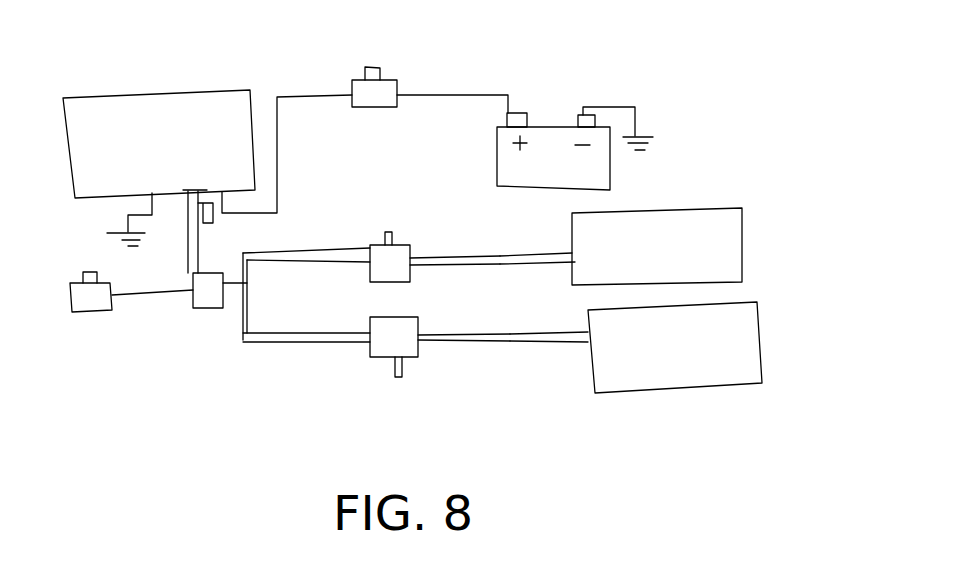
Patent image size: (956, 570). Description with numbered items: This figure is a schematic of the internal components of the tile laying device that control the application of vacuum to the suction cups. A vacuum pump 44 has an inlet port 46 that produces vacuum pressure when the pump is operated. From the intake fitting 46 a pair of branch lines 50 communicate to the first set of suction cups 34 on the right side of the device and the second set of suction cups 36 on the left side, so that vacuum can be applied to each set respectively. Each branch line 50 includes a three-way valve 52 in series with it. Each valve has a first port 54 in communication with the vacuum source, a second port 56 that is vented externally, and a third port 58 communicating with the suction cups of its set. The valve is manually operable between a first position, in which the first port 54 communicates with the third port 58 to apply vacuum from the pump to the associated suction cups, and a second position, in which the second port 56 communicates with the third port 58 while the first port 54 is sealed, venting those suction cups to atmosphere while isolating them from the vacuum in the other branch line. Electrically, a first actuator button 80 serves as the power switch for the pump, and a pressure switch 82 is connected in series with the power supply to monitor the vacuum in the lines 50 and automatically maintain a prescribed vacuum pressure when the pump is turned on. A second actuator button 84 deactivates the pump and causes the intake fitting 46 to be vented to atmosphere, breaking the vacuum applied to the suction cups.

The first set of suction cups 34 is at (770, 353).
The second set of suction cups 36 is at (758, 237).
The vacuum pump 44 is at (158, 102).
The inlet port 46 is at (195, 187).
The branch lines 50 is at (495, 262).
The 3-way valve 52 is at (428, 248).
The first port 54 is at (370, 263).
The second port 56 is at (383, 247).
The third port 58 is at (412, 268).
The first actuator button 80 is at (390, 77).
The pressure switch 82 is at (203, 218).
The second actuator button 84 is at (88, 273).